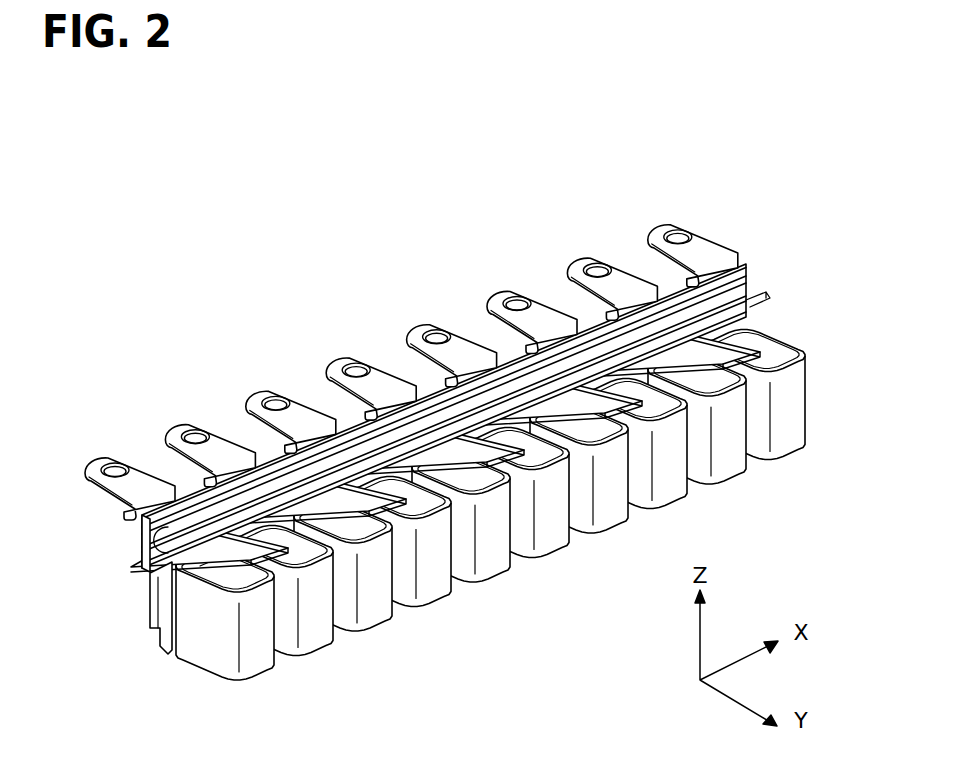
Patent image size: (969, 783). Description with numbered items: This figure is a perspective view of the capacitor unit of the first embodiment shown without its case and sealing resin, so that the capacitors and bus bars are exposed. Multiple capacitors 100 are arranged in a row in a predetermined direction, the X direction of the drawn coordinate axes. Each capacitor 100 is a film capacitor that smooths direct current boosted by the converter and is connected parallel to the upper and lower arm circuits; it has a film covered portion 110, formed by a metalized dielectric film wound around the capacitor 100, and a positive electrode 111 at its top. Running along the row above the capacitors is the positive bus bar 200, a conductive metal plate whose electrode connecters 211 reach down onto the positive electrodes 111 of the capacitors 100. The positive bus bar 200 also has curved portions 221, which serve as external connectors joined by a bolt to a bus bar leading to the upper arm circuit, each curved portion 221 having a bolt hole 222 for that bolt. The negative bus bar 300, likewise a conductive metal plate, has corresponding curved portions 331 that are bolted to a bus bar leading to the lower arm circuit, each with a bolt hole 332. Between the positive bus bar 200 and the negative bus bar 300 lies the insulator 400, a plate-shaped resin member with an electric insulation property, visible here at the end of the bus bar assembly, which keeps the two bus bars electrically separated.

The capacitor 100 is at (496, 524).
The film covered portion 110 is at (209, 650).
The positive electrode 111 is at (205, 562).
The positive bus bar 200 is at (460, 375).
The electrode connecter 211 is at (252, 547).
The curved portion 221 is at (356, 357).
The bolt hole 222 is at (676, 238).
The negative bus bar 300 is at (146, 603).
The curved portion 331 is at (286, 397).
The bolt hole 332 is at (594, 270).
The insulator 400 is at (142, 543).